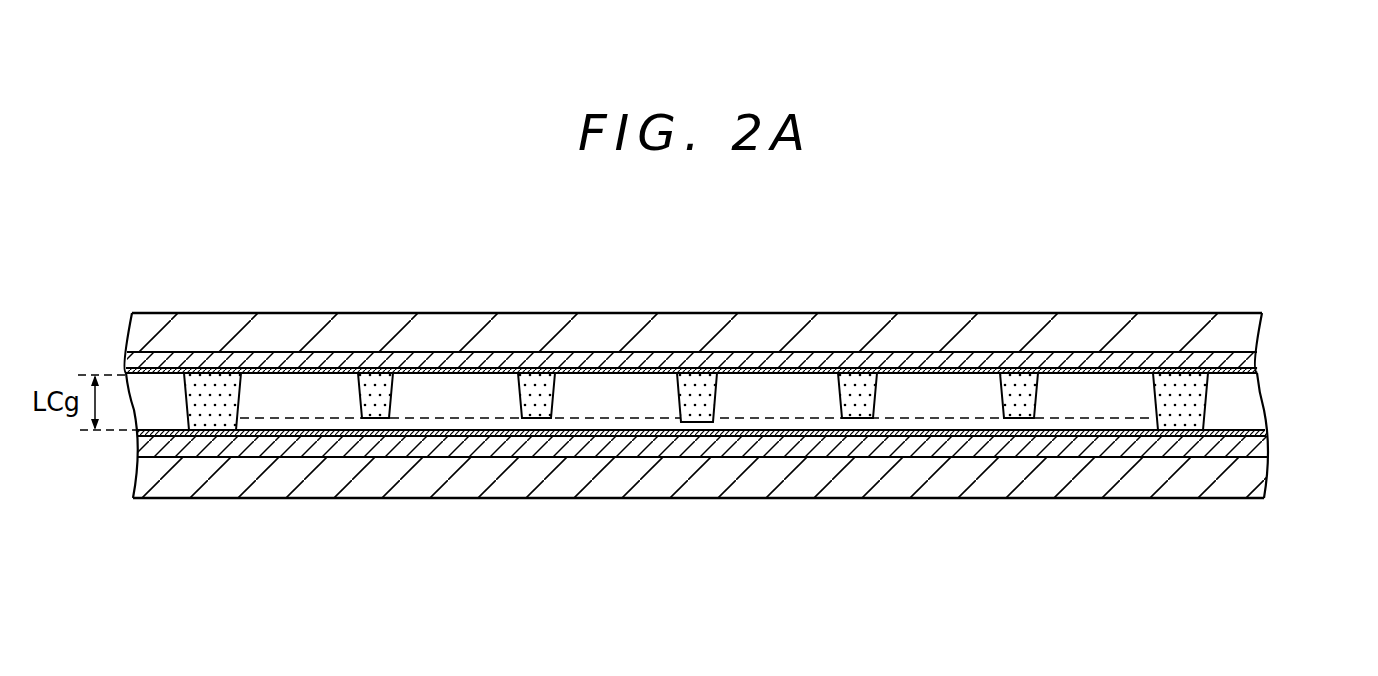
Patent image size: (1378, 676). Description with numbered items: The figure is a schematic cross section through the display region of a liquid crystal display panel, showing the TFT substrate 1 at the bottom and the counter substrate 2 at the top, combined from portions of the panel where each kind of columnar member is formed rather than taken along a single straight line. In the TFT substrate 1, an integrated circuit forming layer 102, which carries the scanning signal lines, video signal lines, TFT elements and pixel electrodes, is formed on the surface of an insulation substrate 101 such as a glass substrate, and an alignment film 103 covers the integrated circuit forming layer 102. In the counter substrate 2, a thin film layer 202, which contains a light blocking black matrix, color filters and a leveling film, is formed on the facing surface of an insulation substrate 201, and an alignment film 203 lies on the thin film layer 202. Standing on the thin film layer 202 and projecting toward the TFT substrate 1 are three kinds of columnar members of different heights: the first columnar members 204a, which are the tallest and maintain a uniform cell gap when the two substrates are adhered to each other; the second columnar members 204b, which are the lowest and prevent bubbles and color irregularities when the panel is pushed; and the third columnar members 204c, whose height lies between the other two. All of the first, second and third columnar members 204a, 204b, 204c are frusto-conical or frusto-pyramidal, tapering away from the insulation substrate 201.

The TFT substrate 1 is at (1282, 463).
The counter substrate 2 is at (1275, 343).
The insulation substrate 101 is at (440, 480).
The integrated circuit forming layer 102 is at (653, 452).
The alignment film 103 is at (851, 432).
The insulation substrate 201 is at (527, 328).
The thin film layer 202 is at (953, 360).
The alignment film 203 is at (281, 365).
The first columnar members 204a is at (219, 382).
The second columnar members 204b is at (368, 380).
The third columnar members 204c is at (690, 385).